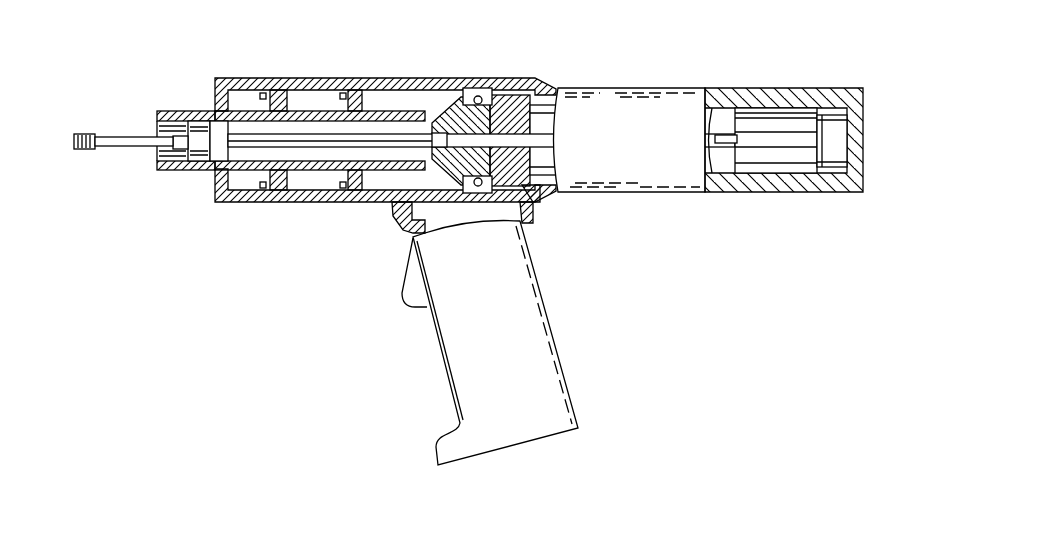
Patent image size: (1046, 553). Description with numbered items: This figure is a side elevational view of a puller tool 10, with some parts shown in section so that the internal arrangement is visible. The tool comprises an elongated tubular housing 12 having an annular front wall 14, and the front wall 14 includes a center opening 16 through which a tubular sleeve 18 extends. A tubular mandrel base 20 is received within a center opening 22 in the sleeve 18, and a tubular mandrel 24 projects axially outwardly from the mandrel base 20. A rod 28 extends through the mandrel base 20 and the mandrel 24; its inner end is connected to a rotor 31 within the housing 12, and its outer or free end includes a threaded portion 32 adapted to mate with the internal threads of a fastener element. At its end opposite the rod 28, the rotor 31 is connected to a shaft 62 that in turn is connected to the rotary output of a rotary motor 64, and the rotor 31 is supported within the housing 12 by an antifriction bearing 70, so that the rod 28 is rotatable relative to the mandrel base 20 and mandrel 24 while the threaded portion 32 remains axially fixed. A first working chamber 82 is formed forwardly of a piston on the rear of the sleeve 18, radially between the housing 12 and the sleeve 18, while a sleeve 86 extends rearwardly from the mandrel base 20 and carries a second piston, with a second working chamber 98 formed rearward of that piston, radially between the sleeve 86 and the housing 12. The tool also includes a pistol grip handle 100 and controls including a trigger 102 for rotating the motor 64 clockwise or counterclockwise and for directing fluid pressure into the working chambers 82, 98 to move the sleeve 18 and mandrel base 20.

The puller tool 10 is at (521, 43).
The elongated tubular housing 12 is at (286, 203).
The annular front wall 14 is at (216, 178).
The center opening 16 is at (212, 108).
The tubular sleeve 18 is at (173, 110).
The tubular mandrel base 20 is at (200, 124).
The center opening 22 is at (155, 125).
The tubular mandrel 24 is at (178, 150).
The rod 28 is at (395, 137).
The rotor 31 is at (457, 180).
The threaded portion 32 is at (85, 150).
The shaft 62 is at (552, 138).
The rotary motor 64 is at (781, 150).
The antifriction bearing 70 is at (450, 100).
The first working chamber 82 is at (250, 100).
The sleeve 86 is at (323, 113).
The second working chamber 98 is at (323, 182).
The pistol grip handle 100 is at (445, 330).
The trigger 102 is at (398, 297).